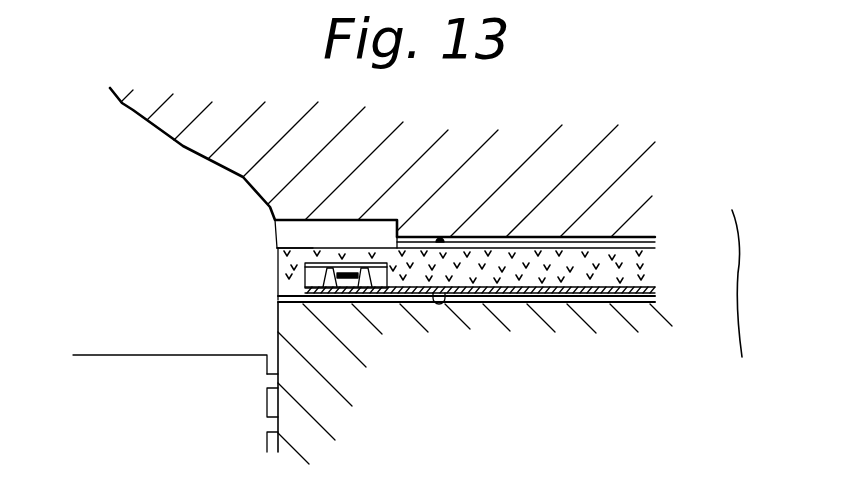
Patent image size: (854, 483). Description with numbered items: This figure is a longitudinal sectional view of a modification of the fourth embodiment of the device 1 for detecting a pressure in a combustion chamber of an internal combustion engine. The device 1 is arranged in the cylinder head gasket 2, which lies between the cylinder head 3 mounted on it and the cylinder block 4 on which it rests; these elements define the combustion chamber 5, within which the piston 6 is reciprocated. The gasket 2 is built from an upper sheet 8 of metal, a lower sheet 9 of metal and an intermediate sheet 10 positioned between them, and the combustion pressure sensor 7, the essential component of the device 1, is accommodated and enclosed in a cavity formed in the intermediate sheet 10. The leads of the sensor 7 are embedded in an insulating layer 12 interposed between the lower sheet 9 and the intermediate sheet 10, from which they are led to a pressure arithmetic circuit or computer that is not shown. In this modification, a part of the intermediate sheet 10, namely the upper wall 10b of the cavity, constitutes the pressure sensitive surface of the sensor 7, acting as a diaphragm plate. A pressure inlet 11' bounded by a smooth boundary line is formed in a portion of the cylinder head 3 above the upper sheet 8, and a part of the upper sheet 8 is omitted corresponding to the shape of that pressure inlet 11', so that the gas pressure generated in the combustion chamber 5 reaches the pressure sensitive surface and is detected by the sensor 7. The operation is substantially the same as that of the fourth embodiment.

The device for detecting a pressure 1 is at (259, 220).
The cylinder head gasket 2 is at (746, 270).
The cylinder head 3 is at (517, 199).
The cylinder block 4 is at (430, 376).
The combustion chamber 5 is at (143, 307).
The piston 6 is at (182, 420).
The combustion pressure sensor 7 is at (313, 272).
The upper sheet 8 is at (655, 243).
The lower sheet 9 is at (654, 303).
The intermediate sheet 10 is at (643, 268).
The upper wall of the cavity 10b is at (318, 254).
The pressure inlet 11' is at (336, 171).
The insulating layer 12 is at (652, 288).